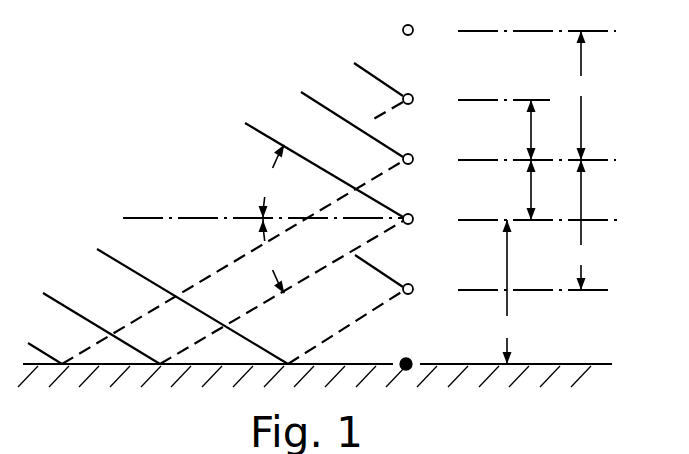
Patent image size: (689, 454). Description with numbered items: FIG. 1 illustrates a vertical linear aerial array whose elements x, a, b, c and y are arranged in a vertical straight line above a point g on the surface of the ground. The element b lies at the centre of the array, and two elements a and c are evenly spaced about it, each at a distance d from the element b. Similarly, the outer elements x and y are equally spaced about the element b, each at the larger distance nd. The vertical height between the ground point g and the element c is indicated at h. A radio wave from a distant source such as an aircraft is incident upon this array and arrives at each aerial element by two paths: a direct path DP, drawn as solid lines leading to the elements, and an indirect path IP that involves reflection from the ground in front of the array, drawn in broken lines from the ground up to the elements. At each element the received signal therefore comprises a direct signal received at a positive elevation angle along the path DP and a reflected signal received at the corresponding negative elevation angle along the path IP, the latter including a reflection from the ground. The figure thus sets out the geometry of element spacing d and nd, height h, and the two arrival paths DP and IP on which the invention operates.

The aerial element x is at (509, 29).
The aerial element a is at (476, 99).
The aerial element b is at (509, 159).
The aerial element c is at (510, 219).
The aerial element y is at (506, 286).
The point on the surface of the ground g is at (315, 381).
The indirect path IP is at (158, 306).
The direct path DP is at (324, 175).
The distance d is at (522, 160).
The distance nd is at (580, 160).
The vertical height h is at (506, 292).